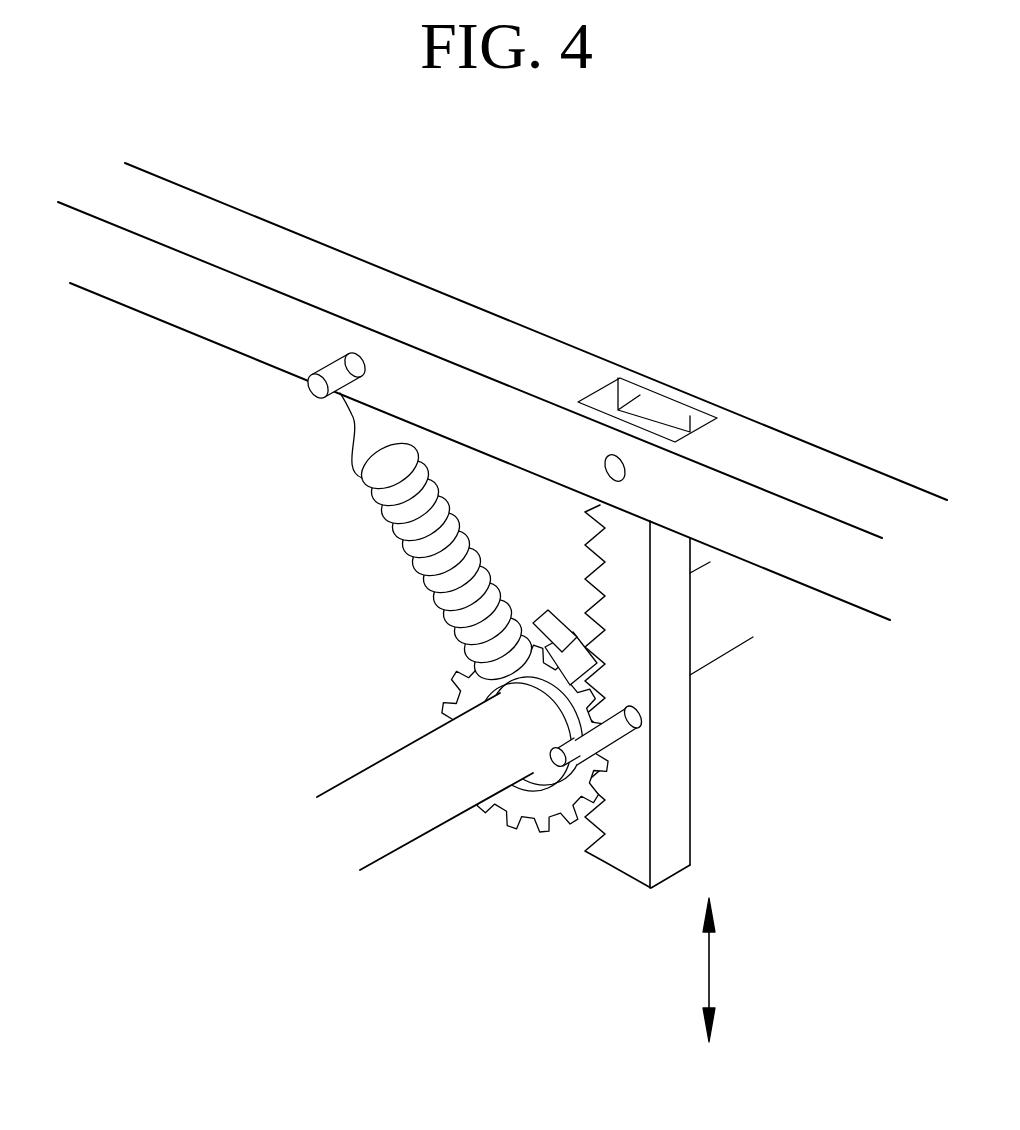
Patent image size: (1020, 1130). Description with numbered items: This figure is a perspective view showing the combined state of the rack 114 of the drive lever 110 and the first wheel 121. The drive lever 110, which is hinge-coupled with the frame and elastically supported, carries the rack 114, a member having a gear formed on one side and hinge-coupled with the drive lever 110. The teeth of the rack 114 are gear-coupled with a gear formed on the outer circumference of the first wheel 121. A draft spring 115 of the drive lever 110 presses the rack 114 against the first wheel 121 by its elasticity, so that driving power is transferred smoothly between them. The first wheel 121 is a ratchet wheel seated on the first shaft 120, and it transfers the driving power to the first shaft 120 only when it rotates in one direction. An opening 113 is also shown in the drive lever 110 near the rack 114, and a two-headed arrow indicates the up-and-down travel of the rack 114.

The drive lever 110 is at (765, 443).
The hole 113 is at (602, 462).
The rack 114 is at (670, 805).
The draft spring 115 is at (373, 518).
The first shaft 120 is at (413, 812).
The first wheel 121 is at (550, 830).